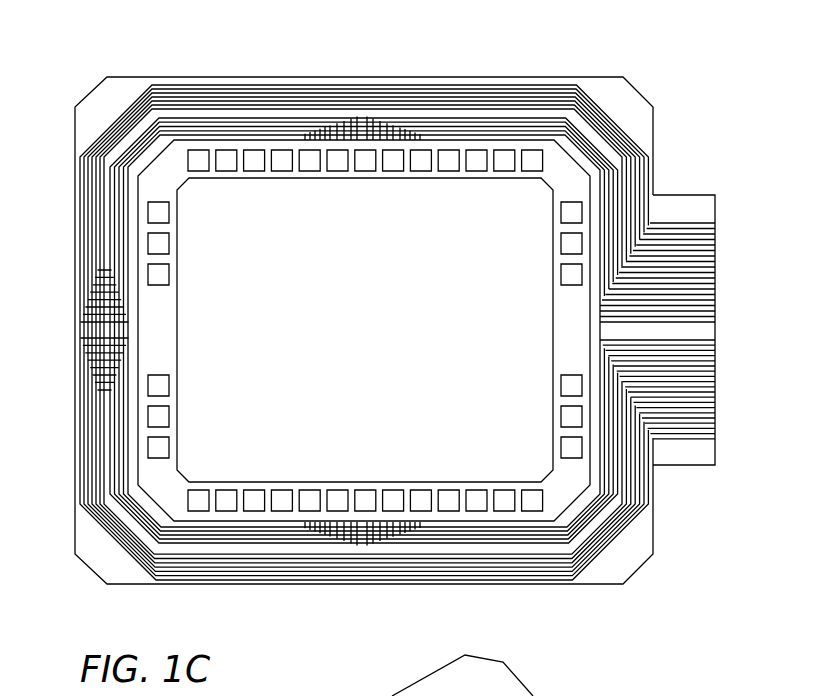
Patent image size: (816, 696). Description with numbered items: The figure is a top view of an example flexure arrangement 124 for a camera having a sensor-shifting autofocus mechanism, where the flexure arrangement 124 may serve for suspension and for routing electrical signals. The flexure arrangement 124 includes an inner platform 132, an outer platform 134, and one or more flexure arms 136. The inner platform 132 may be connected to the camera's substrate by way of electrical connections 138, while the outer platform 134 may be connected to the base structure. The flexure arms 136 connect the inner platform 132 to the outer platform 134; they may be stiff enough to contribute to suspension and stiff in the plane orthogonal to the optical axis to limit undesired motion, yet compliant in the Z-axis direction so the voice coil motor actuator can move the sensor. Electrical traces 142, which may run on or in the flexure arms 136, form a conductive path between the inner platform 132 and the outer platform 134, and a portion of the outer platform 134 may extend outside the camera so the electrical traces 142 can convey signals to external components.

The flexure arrangement 124 is at (381, 299).
The inner platform 132 is at (173, 177).
The outer platform 134 is at (95, 108).
The flexure arms 136 is at (107, 215).
The electrical connections 138 is at (282, 165).
The electrical traces 142 is at (676, 220).